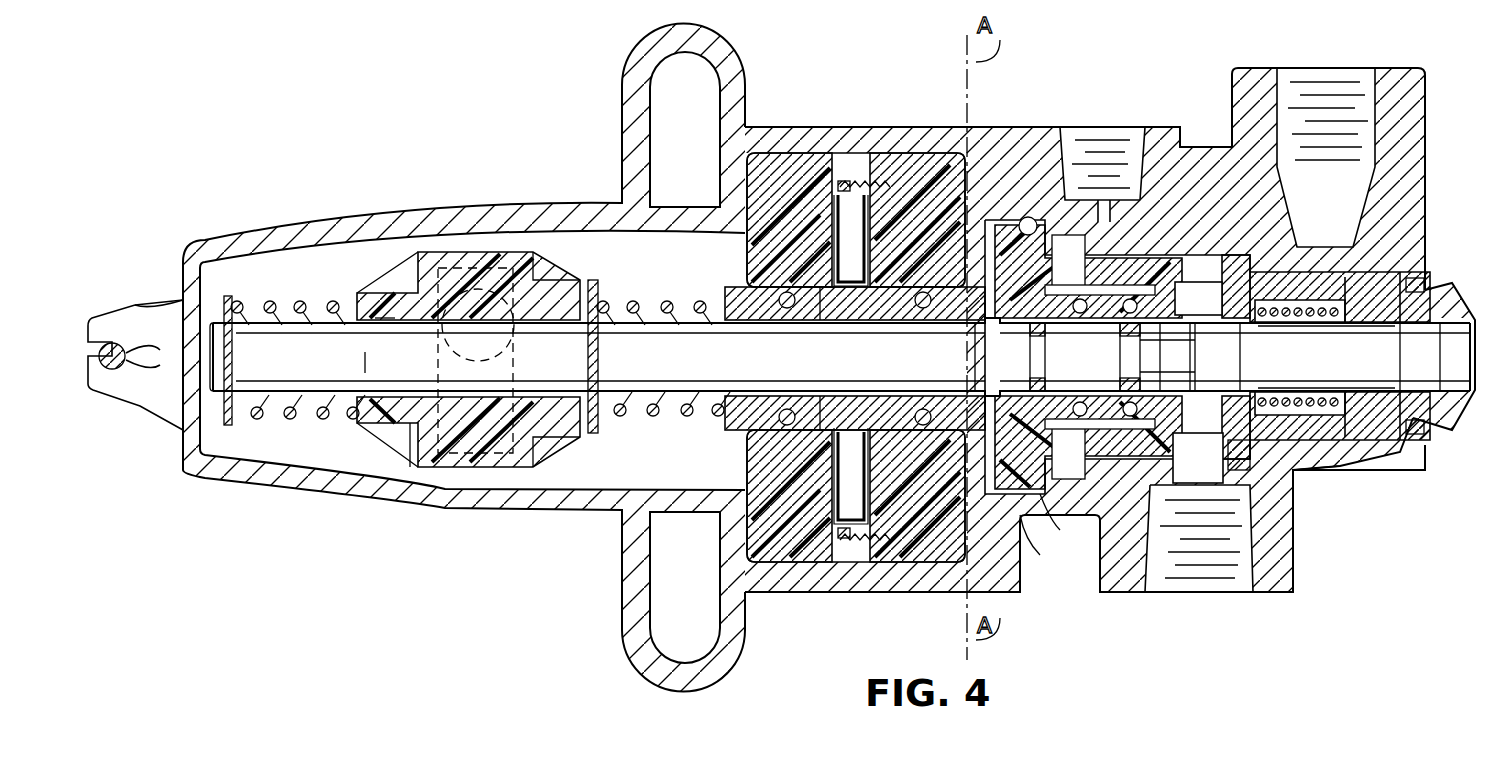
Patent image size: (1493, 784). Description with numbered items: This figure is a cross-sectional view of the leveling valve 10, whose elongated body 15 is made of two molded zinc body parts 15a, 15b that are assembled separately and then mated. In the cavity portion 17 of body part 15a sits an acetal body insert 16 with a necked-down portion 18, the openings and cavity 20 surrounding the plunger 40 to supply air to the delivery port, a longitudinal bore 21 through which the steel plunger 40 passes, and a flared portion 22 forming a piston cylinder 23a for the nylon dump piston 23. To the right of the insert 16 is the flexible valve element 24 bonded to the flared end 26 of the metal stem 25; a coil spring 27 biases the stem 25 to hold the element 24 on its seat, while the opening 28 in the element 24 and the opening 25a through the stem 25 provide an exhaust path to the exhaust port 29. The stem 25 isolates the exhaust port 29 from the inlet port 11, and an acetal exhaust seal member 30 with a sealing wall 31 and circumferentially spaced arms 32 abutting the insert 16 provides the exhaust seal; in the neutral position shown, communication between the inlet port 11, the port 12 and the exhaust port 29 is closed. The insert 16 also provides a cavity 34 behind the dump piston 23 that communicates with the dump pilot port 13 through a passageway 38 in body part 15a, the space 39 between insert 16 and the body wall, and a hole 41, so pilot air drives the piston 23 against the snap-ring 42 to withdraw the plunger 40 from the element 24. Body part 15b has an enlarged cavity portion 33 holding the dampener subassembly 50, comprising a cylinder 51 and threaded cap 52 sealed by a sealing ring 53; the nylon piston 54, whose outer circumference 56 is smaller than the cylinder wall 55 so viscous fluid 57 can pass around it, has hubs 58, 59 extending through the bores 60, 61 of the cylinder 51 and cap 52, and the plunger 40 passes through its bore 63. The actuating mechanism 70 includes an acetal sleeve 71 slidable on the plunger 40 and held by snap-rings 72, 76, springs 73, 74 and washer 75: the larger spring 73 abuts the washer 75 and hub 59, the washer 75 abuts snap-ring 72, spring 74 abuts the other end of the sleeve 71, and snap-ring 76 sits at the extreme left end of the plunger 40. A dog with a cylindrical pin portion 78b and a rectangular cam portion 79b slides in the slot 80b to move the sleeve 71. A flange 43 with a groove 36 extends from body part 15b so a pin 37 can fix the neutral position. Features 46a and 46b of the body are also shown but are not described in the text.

The leveling valve 10 is at (1012, 614).
The inlet port 11 is at (1366, 90).
The port 12 is at (1235, 570).
The dump pilot port 13 is at (1134, 140).
The elongated body 15 is at (947, 114).
The body part 15a is at (1013, 130).
The body part 15b is at (374, 210).
The body insert 16 is at (1050, 492).
The cavity portion 17 is at (1225, 256).
The necked-down portion 18 is at (1270, 455).
The openings and cavity 20 is at (1211, 309).
The bore 21 is at (1157, 392).
The flared portion 22 is at (1055, 250).
The dump piston 23 is at (1022, 522).
The piston cylinder 23a is at (1062, 235).
The flexible valve element 24 is at (1262, 322).
The metal stem 25 is at (1385, 323).
The opening 25a is at (1380, 318).
The flared end 26 is at (1302, 274).
The coil spring 27 is at (1360, 466).
The opening 28 is at (1336, 324).
The exhaust port 29 is at (1450, 425).
The exhaust seal member 30 is at (1416, 300).
The sealing wall 31 is at (1352, 280).
The circumferentially spaced arms 32 is at (1342, 274).
The enlarged cavity portion 33 is at (877, 178).
The cavity 34 is at (1100, 400).
The groove 36 is at (152, 395).
The pin 37 is at (123, 345).
The passageway 38 is at (1112, 210).
The space 39 is at (1110, 242).
The plunger 40 is at (683, 370).
The hole 41 is at (1115, 260).
The snap-ring 42 is at (984, 335).
The flange 43 is at (160, 290).
The mounting ear 46a is at (744, 655).
The mounting ear 46b is at (740, 80).
The dampener subassembly 50 is at (785, 182).
The cylinder 51 is at (918, 560).
The cap 52 is at (815, 560).
The sealing ring 53 is at (845, 180).
The piston 54 is at (810, 480).
The cylinder wall 55 is at (880, 236).
The outer circumference 56 is at (893, 530).
The viscous fluid 57 is at (812, 236).
The hub 58 is at (975, 392).
The hub 59 is at (728, 428).
The bore 60 is at (958, 302).
The bore 61 is at (830, 320).
The bore 63 is at (787, 320).
The actuating mechanism 70 is at (505, 252).
The sleeve 71 is at (533, 270).
The snap-ring 72 is at (580, 315).
The spring 73 is at (668, 418).
The spring 74 is at (294, 413).
The washer 75 is at (598, 285).
The snap-ring 76 is at (233, 310).
The cylindrical pin portion 78b is at (385, 318).
The rectangular cam portion 79b is at (396, 366).
The slot 80b is at (410, 436).